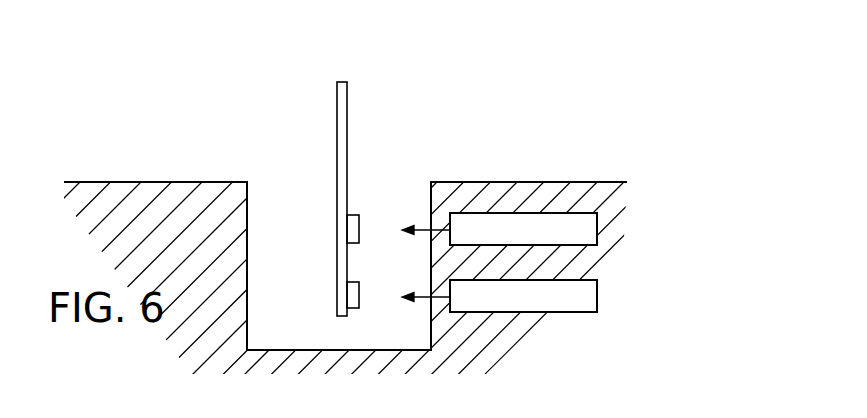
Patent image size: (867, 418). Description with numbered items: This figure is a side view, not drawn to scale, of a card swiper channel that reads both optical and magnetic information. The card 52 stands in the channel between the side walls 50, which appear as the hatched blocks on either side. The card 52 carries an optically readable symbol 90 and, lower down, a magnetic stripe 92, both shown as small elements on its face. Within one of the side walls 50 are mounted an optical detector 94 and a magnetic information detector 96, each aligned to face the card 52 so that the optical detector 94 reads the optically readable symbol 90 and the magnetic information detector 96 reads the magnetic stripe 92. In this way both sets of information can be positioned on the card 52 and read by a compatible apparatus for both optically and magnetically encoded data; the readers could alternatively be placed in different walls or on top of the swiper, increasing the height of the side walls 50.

The side walls 50 is at (177, 182).
The card 52 is at (347, 82).
The optically readable symbol 90 is at (359, 216).
The magnetic stripe 92 is at (359, 283).
The optical detector 94 is at (597, 226).
The magnetic information detector 96 is at (597, 300).